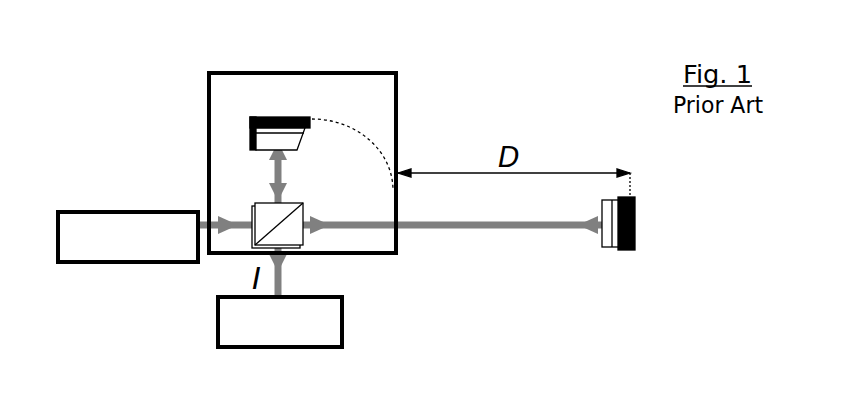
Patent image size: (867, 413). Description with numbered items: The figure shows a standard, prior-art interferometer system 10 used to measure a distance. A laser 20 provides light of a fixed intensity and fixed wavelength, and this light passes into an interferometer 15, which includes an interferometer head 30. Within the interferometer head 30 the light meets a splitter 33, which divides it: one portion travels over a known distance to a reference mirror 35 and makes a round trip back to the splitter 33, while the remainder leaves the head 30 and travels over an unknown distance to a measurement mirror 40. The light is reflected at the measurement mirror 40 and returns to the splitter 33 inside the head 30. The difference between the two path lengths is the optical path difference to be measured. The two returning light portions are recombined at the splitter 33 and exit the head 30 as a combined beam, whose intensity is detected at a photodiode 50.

The interferometer system 10 is at (117, 46).
The interferometer 15 is at (182, 318).
The laser 20 is at (128, 237).
The interferometer head 30 is at (408, 102).
The splitter 33 is at (301, 212).
The reference mirror 35 is at (280, 113).
The measurement mirror 40 is at (645, 223).
The photodiode 50 is at (280, 322).